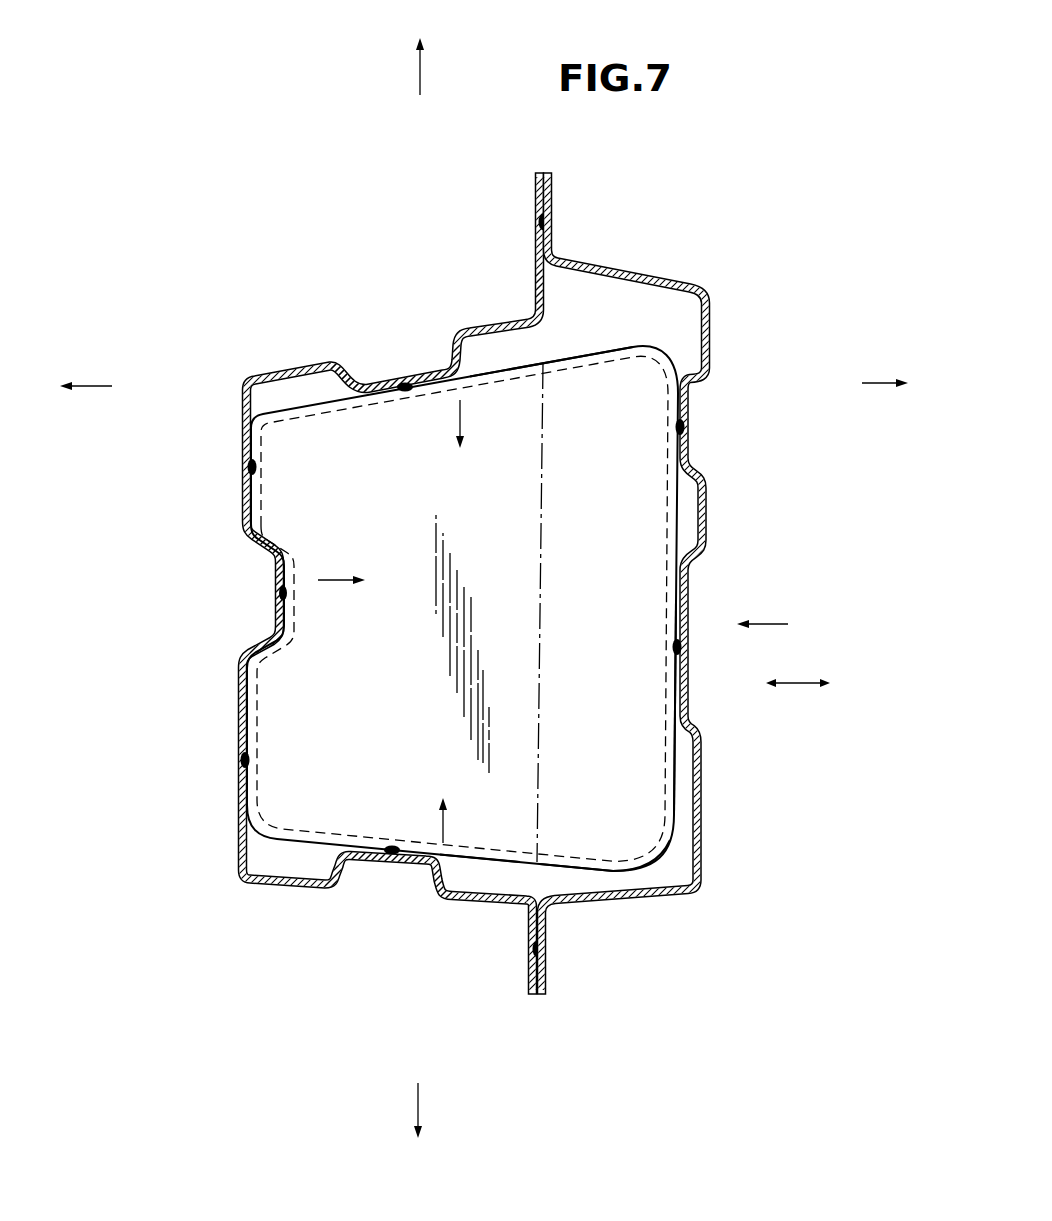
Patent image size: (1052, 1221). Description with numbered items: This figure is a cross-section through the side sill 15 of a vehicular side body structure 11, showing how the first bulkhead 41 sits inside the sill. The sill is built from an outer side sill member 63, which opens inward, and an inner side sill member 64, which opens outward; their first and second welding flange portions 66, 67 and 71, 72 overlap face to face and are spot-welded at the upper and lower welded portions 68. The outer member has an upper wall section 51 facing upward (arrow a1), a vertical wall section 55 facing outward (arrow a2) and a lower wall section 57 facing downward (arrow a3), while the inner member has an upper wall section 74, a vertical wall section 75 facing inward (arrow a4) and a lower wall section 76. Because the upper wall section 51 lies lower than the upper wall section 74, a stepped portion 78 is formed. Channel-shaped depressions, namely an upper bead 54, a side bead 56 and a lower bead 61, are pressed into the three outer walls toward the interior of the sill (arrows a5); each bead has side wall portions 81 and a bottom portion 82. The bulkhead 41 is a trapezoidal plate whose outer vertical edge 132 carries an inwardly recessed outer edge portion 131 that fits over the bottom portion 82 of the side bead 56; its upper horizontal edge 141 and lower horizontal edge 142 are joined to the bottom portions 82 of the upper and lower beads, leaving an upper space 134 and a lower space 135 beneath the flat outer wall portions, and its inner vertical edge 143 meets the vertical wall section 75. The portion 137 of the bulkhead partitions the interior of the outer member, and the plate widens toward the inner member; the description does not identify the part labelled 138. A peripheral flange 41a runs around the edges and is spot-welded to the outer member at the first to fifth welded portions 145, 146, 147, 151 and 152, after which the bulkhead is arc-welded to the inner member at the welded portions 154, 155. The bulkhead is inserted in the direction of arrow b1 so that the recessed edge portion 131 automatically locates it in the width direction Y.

The vehicular side body structure 11 is at (272, 160).
The side sill 15 is at (240, 284).
The first bulkhead 41 is at (602, 340).
The spot-welding peripheral flange 41a is at (520, 375).
The upper wall section 51 is at (485, 322).
The upper bead 54 is at (378, 383).
The vertical wall section 55 is at (238, 432).
The side bead 56 is at (275, 573).
The lower wall section 57 is at (460, 900).
The lower bead 61 is at (373, 860).
The outer side sill member 63 is at (230, 365).
The inner side sill member 64 is at (733, 263).
The first welding flange portion 66 is at (534, 262).
The second welding flange portion 67 is at (528, 927).
The welded portion 68 is at (540, 226).
The first welding flange portion 71 is at (552, 244).
The second welding flange portion 72 is at (547, 930).
The upper wall section 74 is at (673, 273).
The vertical wall section 75 is at (712, 506).
The lower wall section 76 is at (628, 897).
The stepped portion 78 is at (534, 290).
The side wall portion 81 is at (350, 380).
The bottom portion 82 is at (408, 383).
The inwardly recessed outer edge portion 131 is at (250, 527).
The outer vertical edge 132 is at (252, 700).
The upper space 134 is at (298, 392).
The lower space 135 is at (287, 862).
The portion partitioning the interior of the outer side sill member 137 is at (480, 860).
The lower corner section 138 is at (647, 870).
The upper horizontal edge 141 is at (565, 358).
The lower horizontal edge 142 is at (597, 873).
The inner vertical edge 143 is at (680, 800).
The first welded portion 145 is at (258, 467).
The second welded portion 146 is at (250, 760).
The third welded portion 147 is at (286, 596).
The fourth welded portion 151 is at (405, 393).
The fifth welded portion 152 is at (393, 846).
The welded portion 154 is at (678, 430).
The welded portion 155 is at (674, 647).
The arrow a1 is at (405, 63).
The arrow a2 is at (90, 381).
The arrow a3 is at (400, 1110).
The arrow a4 is at (890, 381).
The arrow a5 is at (338, 575).
The arrow b1 is at (787, 620).
The Y-axis direction Y is at (807, 680).